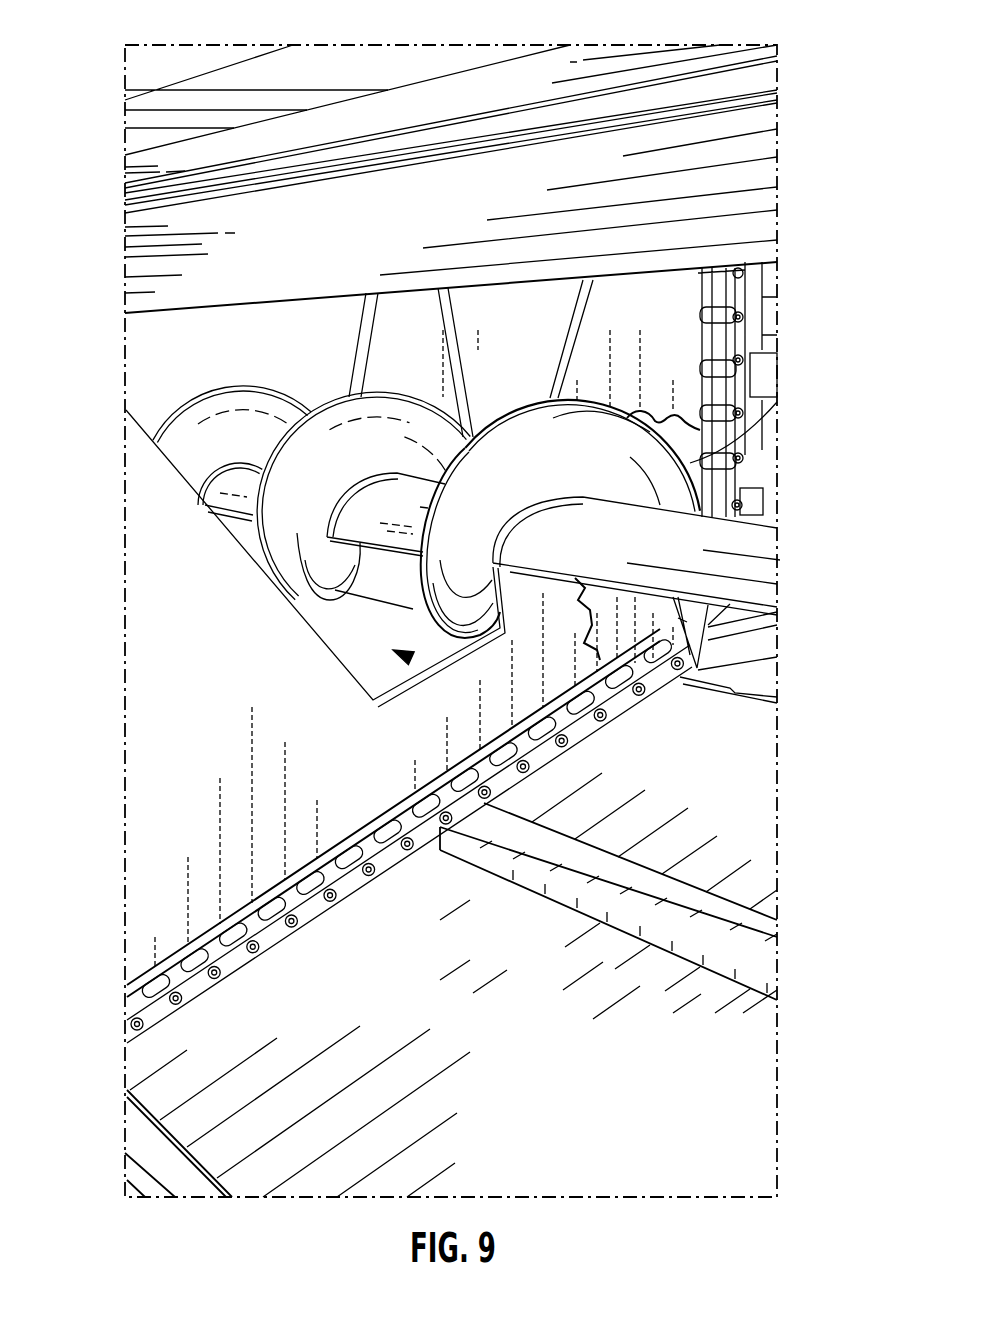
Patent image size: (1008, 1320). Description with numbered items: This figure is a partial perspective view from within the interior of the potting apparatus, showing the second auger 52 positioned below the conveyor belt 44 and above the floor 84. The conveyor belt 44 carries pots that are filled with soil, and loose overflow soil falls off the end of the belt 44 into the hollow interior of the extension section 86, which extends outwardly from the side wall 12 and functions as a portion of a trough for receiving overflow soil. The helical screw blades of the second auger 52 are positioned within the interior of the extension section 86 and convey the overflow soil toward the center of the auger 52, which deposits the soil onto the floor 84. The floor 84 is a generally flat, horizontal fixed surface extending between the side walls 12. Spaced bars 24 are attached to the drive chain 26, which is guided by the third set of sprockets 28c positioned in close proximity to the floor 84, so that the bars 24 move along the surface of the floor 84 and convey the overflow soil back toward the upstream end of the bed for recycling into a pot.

The side wall 12 is at (190, 623).
The bars 24 is at (563, 897).
The drive chain 26 is at (270, 937).
The third set of sprockets 28c is at (713, 458).
The conveyor belt 44 is at (375, 62).
The second auger 52 is at (202, 432).
The floor 84 is at (606, 1122).
The extension section 86 is at (400, 653).